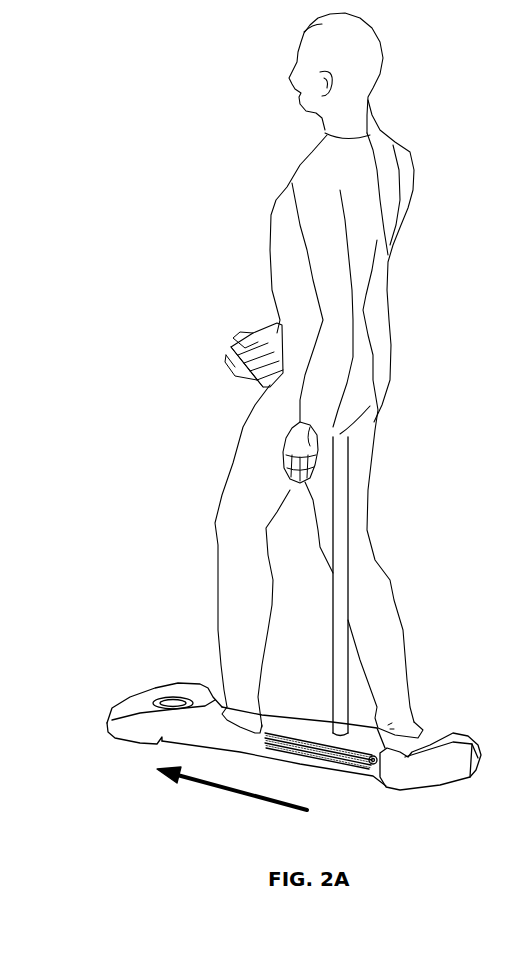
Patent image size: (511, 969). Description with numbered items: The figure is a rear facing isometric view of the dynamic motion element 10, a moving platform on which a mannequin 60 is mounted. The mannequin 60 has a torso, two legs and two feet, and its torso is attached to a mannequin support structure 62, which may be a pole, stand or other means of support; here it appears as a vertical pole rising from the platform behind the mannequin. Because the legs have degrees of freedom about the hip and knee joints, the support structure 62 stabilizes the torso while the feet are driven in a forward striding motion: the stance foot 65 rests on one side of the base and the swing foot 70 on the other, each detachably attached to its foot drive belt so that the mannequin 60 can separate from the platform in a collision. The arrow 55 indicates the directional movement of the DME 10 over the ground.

The dynamic motion element 10 is at (158, 675).
The directional movement of DME 55 is at (245, 793).
The mannequin 60 is at (292, 228).
The mannequin support structure 62 is at (337, 557).
The stance foot 65 is at (232, 734).
The swing foot 70 is at (412, 720).